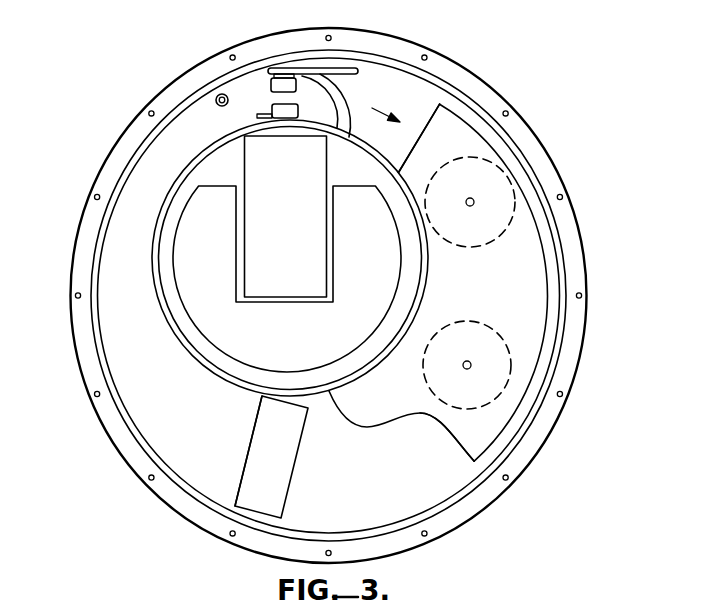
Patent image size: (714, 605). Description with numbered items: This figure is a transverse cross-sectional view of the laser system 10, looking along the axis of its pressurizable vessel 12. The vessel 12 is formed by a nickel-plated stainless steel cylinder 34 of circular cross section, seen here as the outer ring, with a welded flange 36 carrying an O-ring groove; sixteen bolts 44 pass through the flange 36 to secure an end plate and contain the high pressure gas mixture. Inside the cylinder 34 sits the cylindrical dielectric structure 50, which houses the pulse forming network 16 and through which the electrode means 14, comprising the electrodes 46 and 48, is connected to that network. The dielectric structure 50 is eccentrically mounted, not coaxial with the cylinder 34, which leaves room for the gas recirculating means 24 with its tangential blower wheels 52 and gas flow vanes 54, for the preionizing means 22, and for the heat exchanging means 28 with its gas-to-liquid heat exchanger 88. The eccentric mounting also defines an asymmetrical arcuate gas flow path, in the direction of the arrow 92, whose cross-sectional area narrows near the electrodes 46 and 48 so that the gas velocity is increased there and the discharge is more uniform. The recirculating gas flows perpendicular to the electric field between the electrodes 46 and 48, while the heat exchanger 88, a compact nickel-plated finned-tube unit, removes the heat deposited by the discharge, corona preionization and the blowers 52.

The laser system 10 is at (575, 85).
The pressurizable vessel 12 is at (552, 442).
The electrode means 14 is at (360, 90).
The pulse forming network 16 is at (215, 162).
The preionizing means 22 is at (216, 97).
The gas recirculating means 24 is at (455, 459).
The heat exchanging means 28 is at (232, 483).
The stainless steel cylinder 34 is at (567, 274).
The flange 36 is at (87, 225).
The bolts 44 is at (95, 393).
The electrode 46 is at (270, 79).
The electrode 48 is at (271, 103).
The cylindrical dielectric structure 50 is at (148, 296).
The tangential blower wheels 52 is at (512, 205).
The gas flow vanes 54 is at (479, 292).
The gas-to-liquid heat exchanger 88 is at (278, 489).
The arrow 92 is at (413, 131).